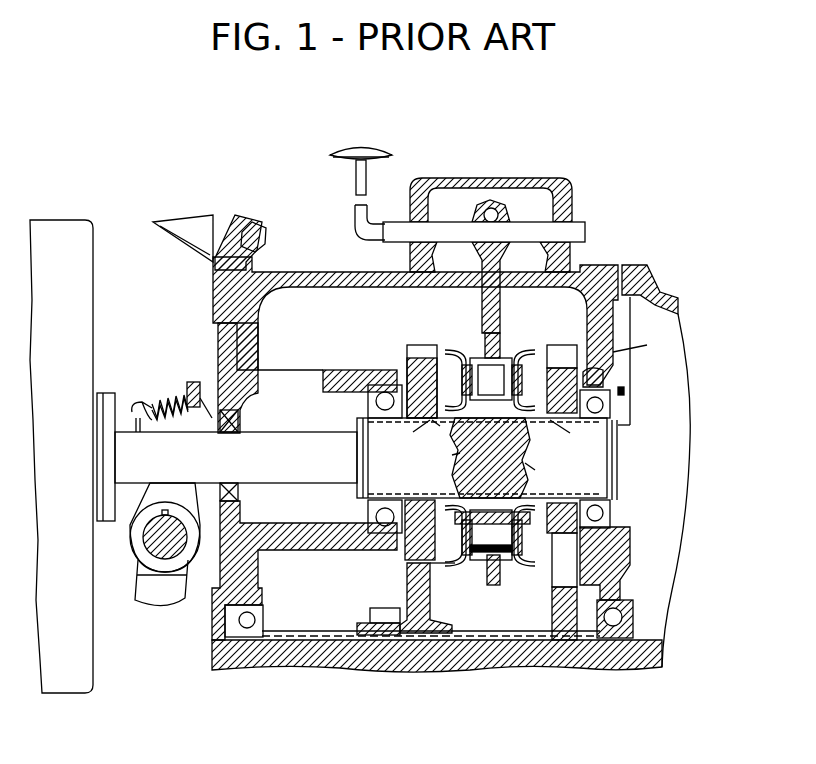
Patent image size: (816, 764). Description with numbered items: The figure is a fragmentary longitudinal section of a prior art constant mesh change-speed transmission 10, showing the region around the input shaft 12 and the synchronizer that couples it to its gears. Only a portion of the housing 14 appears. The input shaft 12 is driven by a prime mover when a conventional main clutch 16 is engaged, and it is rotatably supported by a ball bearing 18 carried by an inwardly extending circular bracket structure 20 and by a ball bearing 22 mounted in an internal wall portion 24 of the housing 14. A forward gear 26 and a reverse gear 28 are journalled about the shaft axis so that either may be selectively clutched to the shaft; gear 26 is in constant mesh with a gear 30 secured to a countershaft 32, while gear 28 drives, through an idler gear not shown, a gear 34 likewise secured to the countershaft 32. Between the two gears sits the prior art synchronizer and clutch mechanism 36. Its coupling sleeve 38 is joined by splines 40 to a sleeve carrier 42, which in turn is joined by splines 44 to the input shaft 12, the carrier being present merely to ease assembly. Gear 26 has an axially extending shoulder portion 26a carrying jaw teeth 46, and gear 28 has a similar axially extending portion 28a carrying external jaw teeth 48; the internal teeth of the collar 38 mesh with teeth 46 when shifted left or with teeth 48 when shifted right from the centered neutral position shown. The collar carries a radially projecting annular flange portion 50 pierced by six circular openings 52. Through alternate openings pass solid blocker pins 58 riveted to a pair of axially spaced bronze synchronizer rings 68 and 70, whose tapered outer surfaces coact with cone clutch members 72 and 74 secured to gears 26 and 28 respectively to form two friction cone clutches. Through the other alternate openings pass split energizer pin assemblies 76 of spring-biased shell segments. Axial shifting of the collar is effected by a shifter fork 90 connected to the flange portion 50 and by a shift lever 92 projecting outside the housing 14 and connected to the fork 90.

The transmission 10 is at (654, 256).
The input shaft 12 is at (292, 450).
The housing 14 is at (333, 272).
The main clutch 16 is at (80, 300).
The ball bearing 18 is at (373, 370).
The circular bracket structure 20 is at (328, 370).
The ball bearing 22 is at (626, 393).
The internal wall portion 24 is at (644, 349).
The forward gear 26 is at (410, 345).
The axially extending shoulder portion 26a is at (404, 433).
The reverse gear 28 is at (568, 375).
The axially extending portion 28a is at (581, 433).
The gear 30 is at (407, 582).
The countershaft 32 is at (335, 633).
The gear 34 is at (553, 607).
The synchronizer and clutch mechanism 36 is at (509, 345).
The coupling sleeve 38 is at (444, 433).
The splines 40 is at (445, 455).
The sleeve carrier 42 is at (520, 440).
The splines 44 is at (545, 470).
The jaw teeth 46 is at (413, 380).
The external jaw teeth 48 is at (537, 372).
The annular flange portion 50 is at (485, 310).
The openings 52 is at (492, 563).
The blocker pins 58 is at (477, 353).
The synchronizer ring 68 is at (467, 353).
The synchronizer ring 70 is at (523, 350).
The cone clutch member 72 is at (443, 353).
The cone clutch member 74 is at (537, 353).
The energizer pin assemblies 76 is at (475, 563).
The shifter fork 90 is at (498, 266).
The shift lever 92 is at (365, 188).